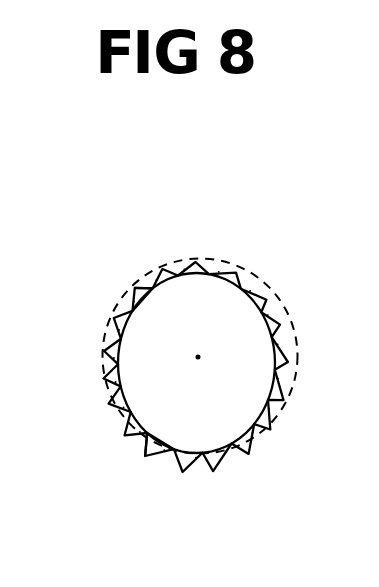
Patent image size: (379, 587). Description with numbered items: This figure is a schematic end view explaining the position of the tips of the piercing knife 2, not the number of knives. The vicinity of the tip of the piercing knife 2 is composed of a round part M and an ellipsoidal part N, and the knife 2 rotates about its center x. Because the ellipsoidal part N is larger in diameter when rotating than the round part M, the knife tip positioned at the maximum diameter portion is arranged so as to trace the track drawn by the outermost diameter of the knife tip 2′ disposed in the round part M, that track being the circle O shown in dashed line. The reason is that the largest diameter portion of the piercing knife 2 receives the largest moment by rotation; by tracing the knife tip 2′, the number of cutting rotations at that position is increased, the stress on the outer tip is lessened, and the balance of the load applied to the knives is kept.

The piercing knife 2 is at (270, 293).
The knife tip 2′ is at (117, 312).
The circle O is at (166, 260).
The round part M is at (283, 353).
The ellipsoidal part N is at (225, 462).
The center x is at (237, 338).